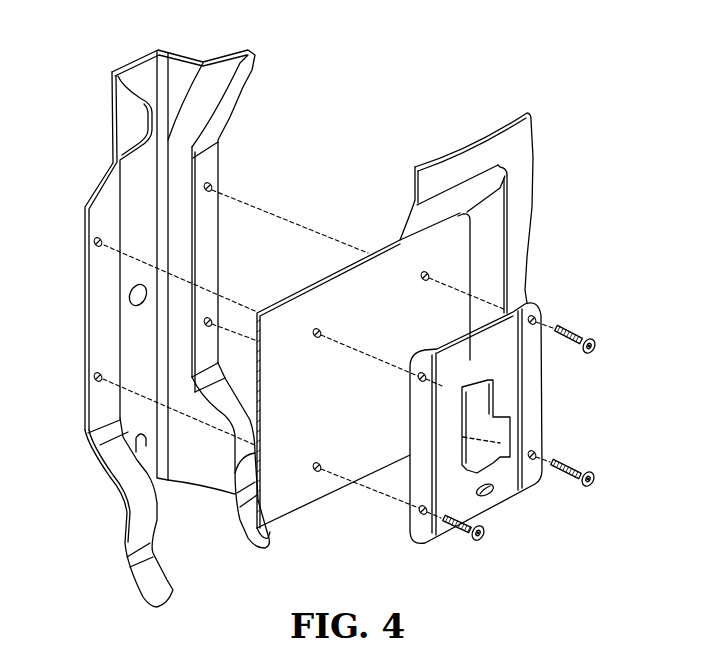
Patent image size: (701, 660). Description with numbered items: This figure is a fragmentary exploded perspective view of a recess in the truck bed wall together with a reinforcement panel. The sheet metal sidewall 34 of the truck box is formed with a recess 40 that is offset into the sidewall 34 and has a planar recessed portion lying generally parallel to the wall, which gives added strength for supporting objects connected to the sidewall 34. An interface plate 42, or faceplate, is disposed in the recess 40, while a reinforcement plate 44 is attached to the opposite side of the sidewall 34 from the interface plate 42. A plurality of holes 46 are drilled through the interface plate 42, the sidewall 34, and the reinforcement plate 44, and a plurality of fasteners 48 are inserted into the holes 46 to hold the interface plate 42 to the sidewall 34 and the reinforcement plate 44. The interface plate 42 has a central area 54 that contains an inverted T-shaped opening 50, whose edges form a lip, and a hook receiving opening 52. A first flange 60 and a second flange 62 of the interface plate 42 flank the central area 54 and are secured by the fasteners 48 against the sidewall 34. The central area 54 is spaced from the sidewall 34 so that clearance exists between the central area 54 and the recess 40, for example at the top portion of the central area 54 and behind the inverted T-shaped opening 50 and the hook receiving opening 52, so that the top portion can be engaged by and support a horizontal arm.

The sidewall 34 is at (485, 229).
The recess 40 is at (495, 221).
The interface plate 42 is at (481, 423).
The reinforcement plate 44 is at (207, 166).
The holes 46 is at (101, 382).
The fasteners 48 is at (581, 330).
The inverted T-shaped opening 50 is at (498, 432).
The hook receiving opening 52 is at (493, 487).
The central area 54 is at (463, 358).
The first flange 60 is at (422, 444).
The second flange 62 is at (537, 397).